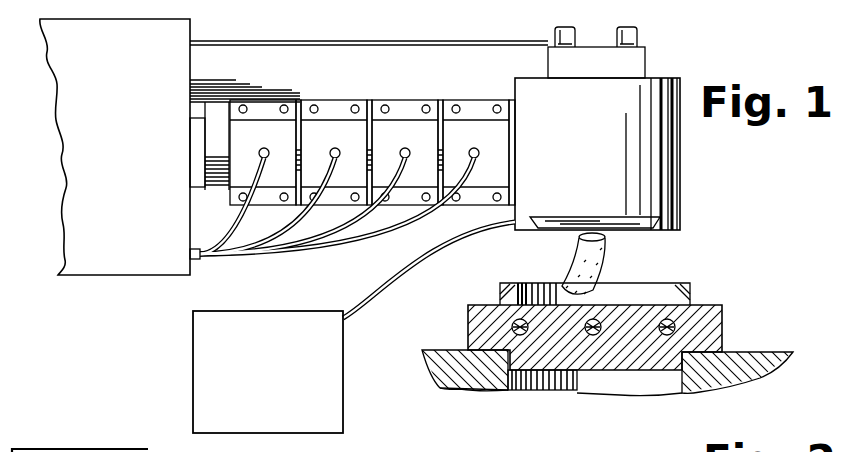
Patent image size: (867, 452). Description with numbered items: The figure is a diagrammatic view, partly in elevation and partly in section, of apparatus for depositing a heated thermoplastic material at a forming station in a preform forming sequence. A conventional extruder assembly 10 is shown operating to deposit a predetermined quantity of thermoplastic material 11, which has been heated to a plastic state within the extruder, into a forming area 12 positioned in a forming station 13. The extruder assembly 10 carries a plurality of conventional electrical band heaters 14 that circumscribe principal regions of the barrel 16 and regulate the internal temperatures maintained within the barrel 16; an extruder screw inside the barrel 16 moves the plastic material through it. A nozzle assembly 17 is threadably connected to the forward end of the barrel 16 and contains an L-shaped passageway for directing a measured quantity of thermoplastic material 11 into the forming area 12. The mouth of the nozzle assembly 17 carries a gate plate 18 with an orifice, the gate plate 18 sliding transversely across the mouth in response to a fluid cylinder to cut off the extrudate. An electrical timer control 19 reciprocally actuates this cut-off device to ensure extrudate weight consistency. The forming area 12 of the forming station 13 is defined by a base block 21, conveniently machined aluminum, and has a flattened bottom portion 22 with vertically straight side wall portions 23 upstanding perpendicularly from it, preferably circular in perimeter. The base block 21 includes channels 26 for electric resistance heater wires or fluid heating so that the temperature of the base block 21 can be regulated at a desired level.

The extruder assembly 10 is at (309, 41).
The thermoplastic material 11 is at (605, 271).
The forming area 12 is at (650, 295).
The forming station 13 is at (737, 302).
The electrical band heaters 14 is at (325, 130).
The barrel 16 is at (215, 135).
The nozzle assembly 17 is at (660, 77).
The gate plate 18 is at (640, 222).
The electrical timer control 19 is at (259, 318).
The base block 21 is at (472, 308).
The flattened bottom portion 22 is at (558, 300).
The side wall portions 23 is at (528, 290).
The channels 26 is at (575, 371).